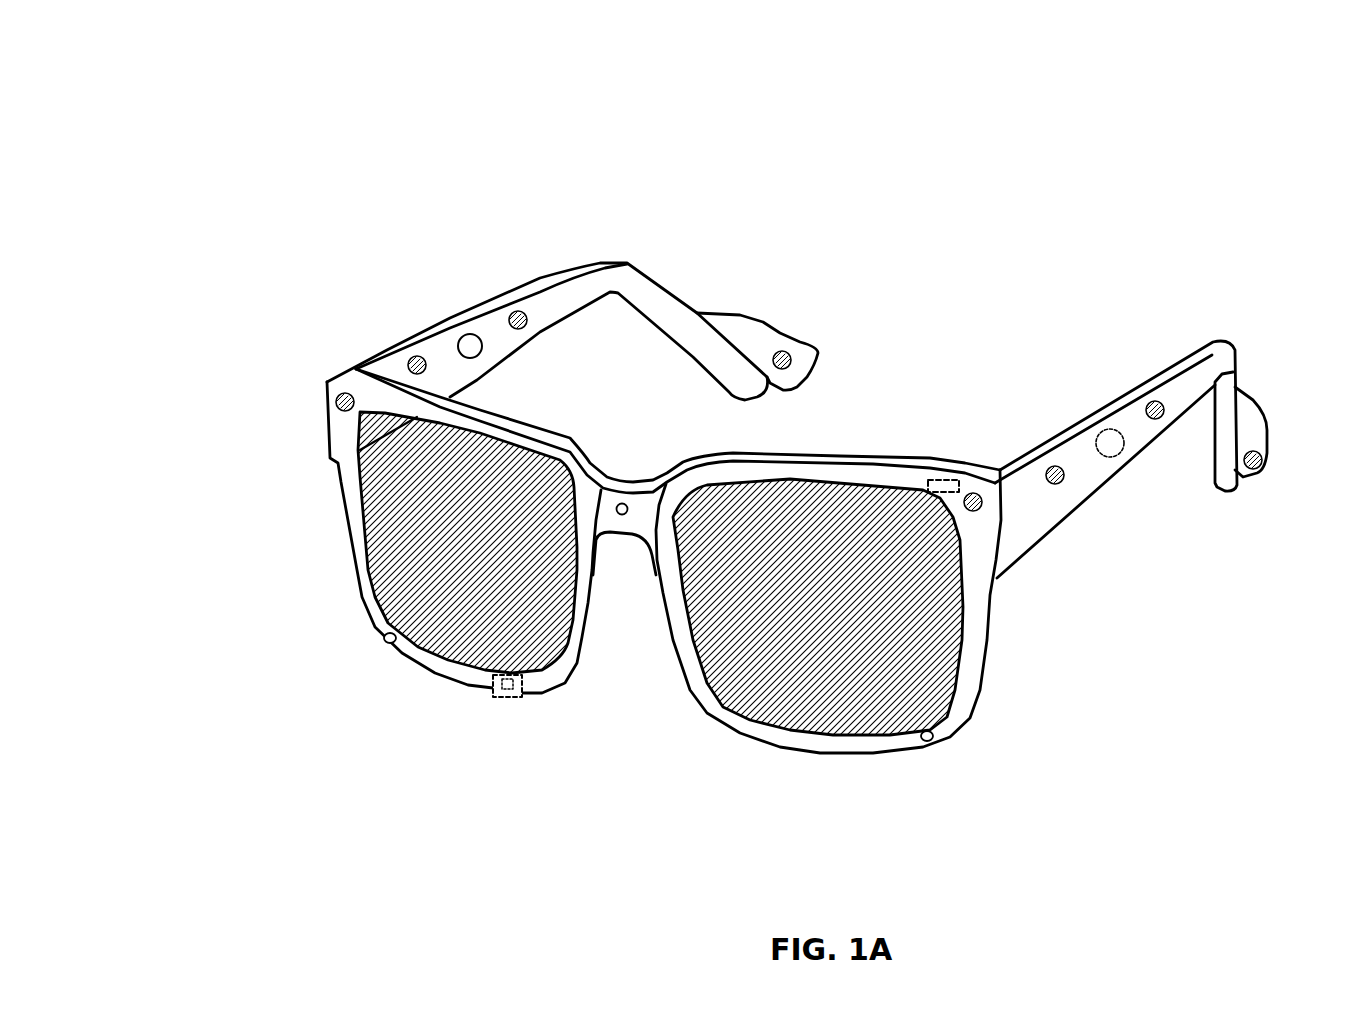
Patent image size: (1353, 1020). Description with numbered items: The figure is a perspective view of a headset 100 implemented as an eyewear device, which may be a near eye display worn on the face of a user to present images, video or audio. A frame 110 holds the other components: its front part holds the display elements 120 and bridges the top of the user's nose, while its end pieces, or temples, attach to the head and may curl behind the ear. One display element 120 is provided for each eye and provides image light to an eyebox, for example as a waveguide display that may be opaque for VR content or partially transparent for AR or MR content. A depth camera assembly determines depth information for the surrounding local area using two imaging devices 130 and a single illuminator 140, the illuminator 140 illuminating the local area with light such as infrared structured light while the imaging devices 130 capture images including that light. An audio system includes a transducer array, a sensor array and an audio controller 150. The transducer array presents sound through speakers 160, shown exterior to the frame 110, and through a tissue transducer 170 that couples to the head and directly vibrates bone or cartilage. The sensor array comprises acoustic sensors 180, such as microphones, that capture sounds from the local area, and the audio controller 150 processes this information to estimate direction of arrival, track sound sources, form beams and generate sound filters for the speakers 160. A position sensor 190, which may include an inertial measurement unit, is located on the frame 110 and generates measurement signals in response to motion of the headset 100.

The headset 100 is at (227, 94).
The frame 110 is at (1222, 342).
The display element 120 is at (412, 538).
The imaging device 130 is at (386, 644).
The illuminator 140 is at (622, 515).
The audio controller 150 is at (940, 480).
The speaker 160 is at (468, 334).
The tissue transducer 170 is at (740, 318).
The acoustic sensor 180 is at (346, 393).
The position sensor 190 is at (508, 689).